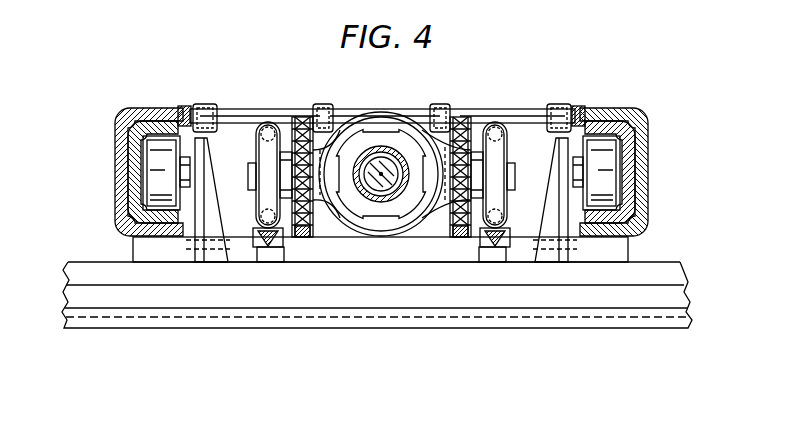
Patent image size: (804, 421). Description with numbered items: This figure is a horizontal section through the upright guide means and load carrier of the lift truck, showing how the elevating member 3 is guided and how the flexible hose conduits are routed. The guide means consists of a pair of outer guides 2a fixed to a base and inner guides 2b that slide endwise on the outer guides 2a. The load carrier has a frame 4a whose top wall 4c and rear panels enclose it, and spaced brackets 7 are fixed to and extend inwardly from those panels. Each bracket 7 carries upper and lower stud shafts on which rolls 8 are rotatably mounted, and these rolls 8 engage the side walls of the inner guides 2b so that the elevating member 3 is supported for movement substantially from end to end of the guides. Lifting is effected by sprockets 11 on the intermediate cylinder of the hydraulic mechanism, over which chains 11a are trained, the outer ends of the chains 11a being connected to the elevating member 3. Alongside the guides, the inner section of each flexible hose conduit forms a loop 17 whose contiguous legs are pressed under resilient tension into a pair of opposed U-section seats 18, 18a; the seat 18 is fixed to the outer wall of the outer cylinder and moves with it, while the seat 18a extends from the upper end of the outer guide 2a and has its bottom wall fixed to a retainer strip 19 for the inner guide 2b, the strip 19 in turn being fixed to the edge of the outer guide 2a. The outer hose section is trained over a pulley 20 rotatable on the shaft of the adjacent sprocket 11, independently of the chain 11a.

The outer guides 2a is at (650, 169).
The inner guides 2b is at (649, 140).
The elevating member 3 is at (530, 228).
The frame 4a is at (108, 275).
The top wall 4c is at (78, 298).
The brackets 7 is at (195, 254).
The rolls 8 is at (612, 187).
The sprockets 11 is at (295, 116).
The chains 11a is at (313, 240).
The loop 17 is at (250, 118).
The seat 18 is at (323, 104).
The seat 18a is at (226, 90).
The retainer strip 19 is at (185, 107).
The pulley 20 is at (258, 199).